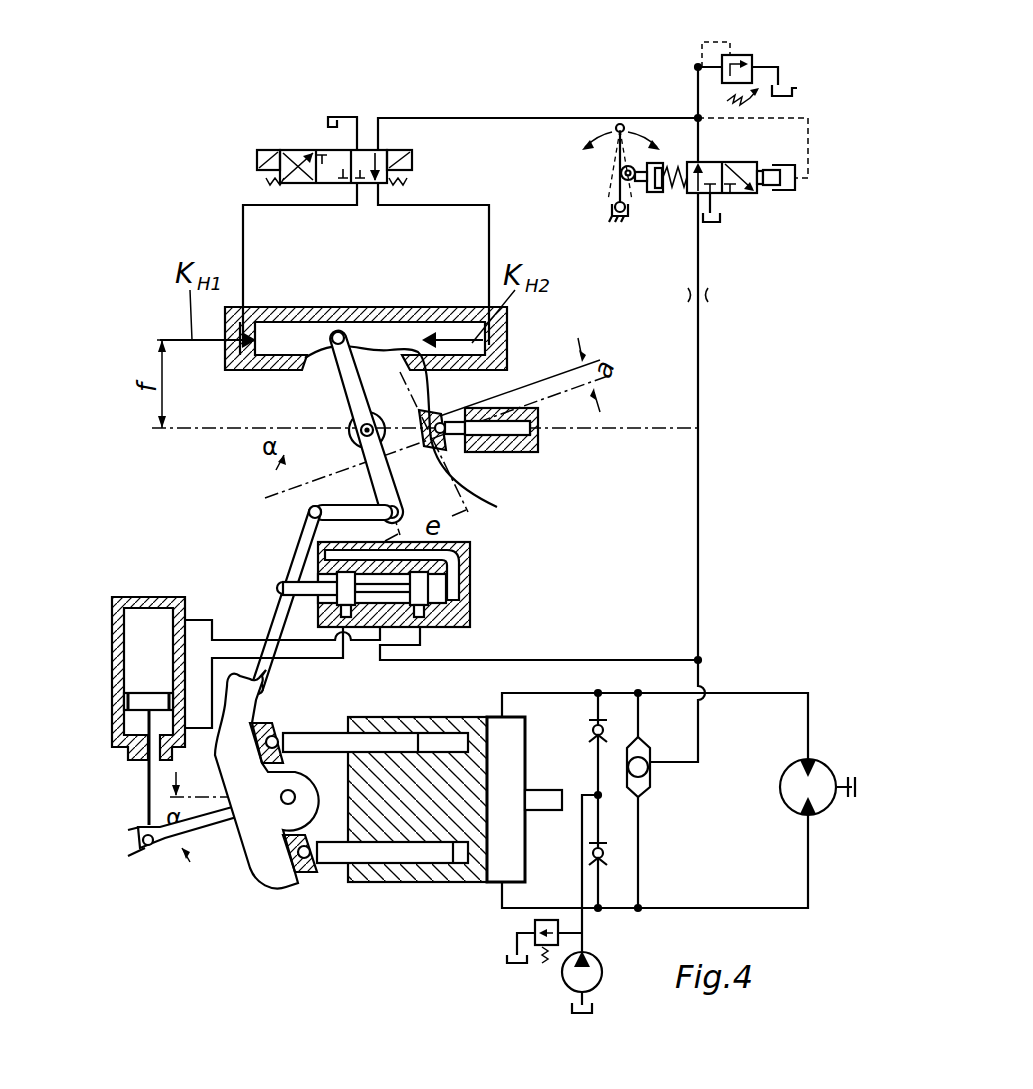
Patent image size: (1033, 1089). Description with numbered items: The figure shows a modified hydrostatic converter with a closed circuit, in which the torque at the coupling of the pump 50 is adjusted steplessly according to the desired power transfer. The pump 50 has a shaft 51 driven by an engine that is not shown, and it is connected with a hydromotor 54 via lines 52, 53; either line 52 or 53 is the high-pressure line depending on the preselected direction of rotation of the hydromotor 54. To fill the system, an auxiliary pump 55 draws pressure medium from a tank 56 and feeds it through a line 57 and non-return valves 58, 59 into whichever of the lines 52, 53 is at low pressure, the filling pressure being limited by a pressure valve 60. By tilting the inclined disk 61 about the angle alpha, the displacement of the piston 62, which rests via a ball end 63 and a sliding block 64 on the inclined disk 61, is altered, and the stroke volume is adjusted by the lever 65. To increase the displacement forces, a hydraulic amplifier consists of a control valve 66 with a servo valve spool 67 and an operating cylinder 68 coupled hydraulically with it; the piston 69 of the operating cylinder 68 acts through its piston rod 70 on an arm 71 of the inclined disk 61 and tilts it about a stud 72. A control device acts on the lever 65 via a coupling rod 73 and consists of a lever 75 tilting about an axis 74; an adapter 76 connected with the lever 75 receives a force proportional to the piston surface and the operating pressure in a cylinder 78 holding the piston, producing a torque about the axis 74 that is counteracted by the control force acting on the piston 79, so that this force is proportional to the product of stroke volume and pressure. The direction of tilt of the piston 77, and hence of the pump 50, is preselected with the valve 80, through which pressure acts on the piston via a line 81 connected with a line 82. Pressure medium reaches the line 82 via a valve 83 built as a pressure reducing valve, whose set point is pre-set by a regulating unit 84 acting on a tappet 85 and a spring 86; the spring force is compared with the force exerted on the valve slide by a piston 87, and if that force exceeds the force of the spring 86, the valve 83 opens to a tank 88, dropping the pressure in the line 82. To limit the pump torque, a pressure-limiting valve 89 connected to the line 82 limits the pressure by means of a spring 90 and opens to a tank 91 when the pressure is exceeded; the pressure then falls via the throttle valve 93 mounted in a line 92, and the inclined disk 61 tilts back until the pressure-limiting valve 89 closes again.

The pump 50 is at (452, 880).
The shaft 51 is at (540, 795).
The line 52 is at (730, 697).
The line 53 is at (733, 906).
The hydromotor 54 is at (806, 812).
The auxiliary pump 55 is at (600, 965).
The tank 56 is at (592, 1009).
The line 57 is at (582, 843).
The non-return valve 58 is at (592, 740).
The non-return valve 59 is at (600, 850).
The pressure valve 60 is at (537, 950).
The inclined disk 61 is at (288, 877).
The piston 62 is at (397, 856).
The ball end 63 is at (320, 868).
The sliding block 64 is at (278, 730).
The lever 65 is at (298, 537).
The control valve 66 is at (411, 596).
The servo valve spool 67 is at (470, 602).
The operating cylinder 68 is at (152, 598).
The piston 69 is at (142, 700).
The piston rod 70 is at (147, 775).
The arm 71 is at (180, 856).
The stud 72 is at (290, 808).
The coupling rod 73 is at (366, 511).
The axis 74 is at (360, 436).
The lever 75 is at (340, 368).
The adapter 76 is at (458, 506).
The piston 77 is at (500, 450).
The cylinder 78 is at (540, 450).
The piston 79 is at (280, 330).
The valve 80 is at (305, 158).
The line 81 is at (490, 237).
The line 82 is at (520, 115).
The valve 83 is at (735, 195).
The regulating unit 84 is at (612, 150).
The tappet 85 is at (646, 190).
The spring 86 is at (673, 190).
The piston 87 is at (781, 188).
The tank 88 is at (713, 224).
The pressure-limiting valve 89 is at (760, 56).
The spring 90 is at (752, 98).
The tank 91 is at (797, 91).
The line 92 is at (702, 565).
The throttle valve 93 is at (708, 296).